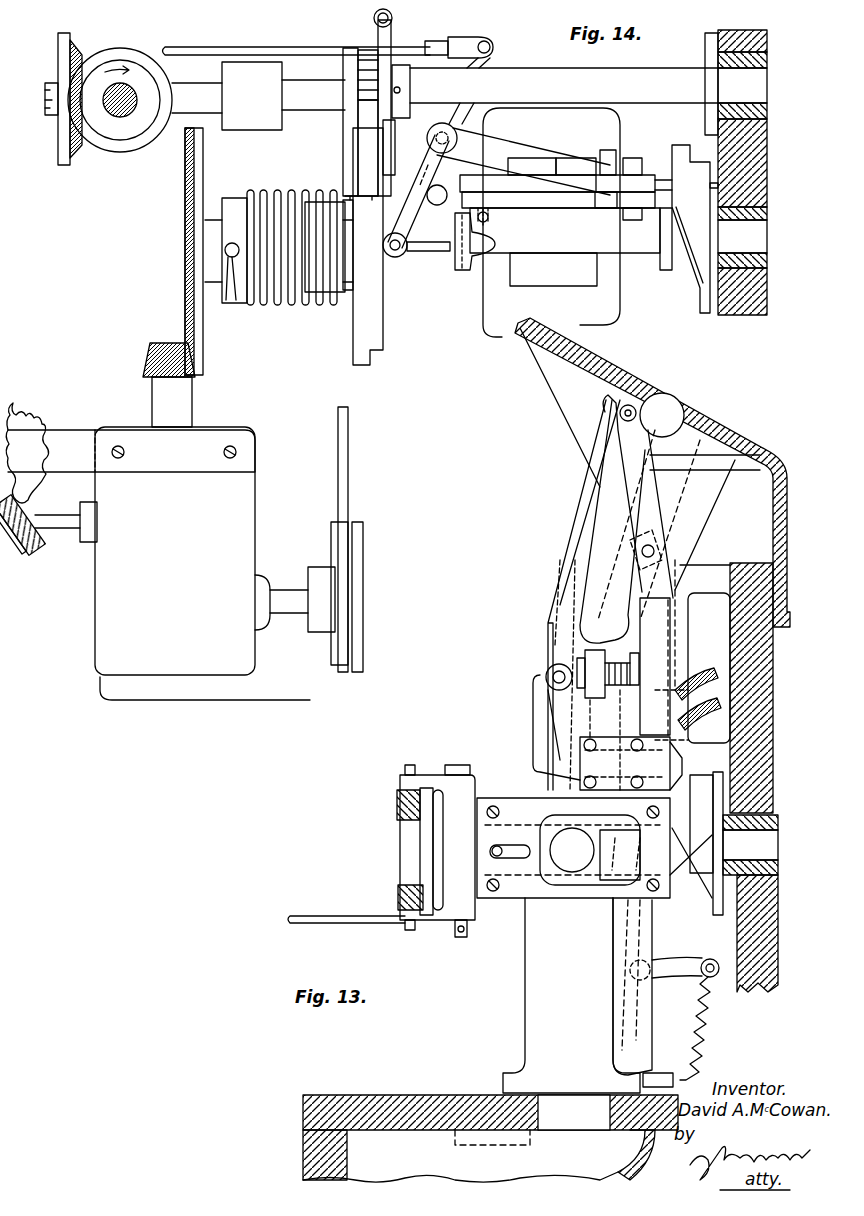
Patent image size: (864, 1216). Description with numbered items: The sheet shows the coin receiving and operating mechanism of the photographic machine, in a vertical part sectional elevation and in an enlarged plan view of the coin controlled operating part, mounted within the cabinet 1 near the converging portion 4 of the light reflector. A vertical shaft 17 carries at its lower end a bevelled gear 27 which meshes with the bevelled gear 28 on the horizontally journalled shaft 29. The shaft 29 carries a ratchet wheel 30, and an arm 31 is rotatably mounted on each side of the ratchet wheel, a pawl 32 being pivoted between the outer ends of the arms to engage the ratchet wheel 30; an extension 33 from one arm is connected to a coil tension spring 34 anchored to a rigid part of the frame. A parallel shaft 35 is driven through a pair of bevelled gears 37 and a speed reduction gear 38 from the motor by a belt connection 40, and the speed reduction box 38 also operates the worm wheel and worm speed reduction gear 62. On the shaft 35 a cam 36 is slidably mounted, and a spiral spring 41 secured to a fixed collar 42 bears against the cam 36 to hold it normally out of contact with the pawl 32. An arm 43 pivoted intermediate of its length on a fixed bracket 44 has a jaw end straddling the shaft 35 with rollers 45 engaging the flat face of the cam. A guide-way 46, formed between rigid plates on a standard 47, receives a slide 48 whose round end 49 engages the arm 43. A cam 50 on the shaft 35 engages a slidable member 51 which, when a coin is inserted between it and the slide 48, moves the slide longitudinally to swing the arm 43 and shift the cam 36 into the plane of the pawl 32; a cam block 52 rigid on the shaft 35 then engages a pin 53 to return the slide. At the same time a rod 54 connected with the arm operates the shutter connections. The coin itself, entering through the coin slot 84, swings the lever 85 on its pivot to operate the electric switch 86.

In FIG. 14, the cabinet 1 is at (749, 48).
In FIG. 13, the cabinet 1 is at (752, 985).
In FIG. 13, the converging portion 4 is at (628, 405).
In FIG. 14, the vertical shaft 17 is at (125, 112).
In FIG. 14, the bevelled gear 27 is at (136, 54).
In FIG. 14, the bevelled gear 28 is at (63, 158).
In FIG. 14, the shaft 29 is at (190, 88).
In FIG. 14, the ratchet wheel 30 is at (362, 58).
In FIG. 14, the arm 31 is at (346, 134).
In FIG. 14, the pawl 32 is at (362, 156).
In FIG. 14, the extension 33 is at (430, 43).
In FIG. 14, the coil tension spring 34 is at (393, 21).
In FIG. 14, the shaft 35 is at (638, 247).
In FIG. 14, the cam 36 is at (374, 242).
In FIG. 14, the bevelled gears 37 is at (170, 343).
In FIG. 14, the speed reduction gear 38 is at (170, 551).
In FIG. 14, the belt connection 40 is at (349, 485).
In FIG. 14, the spiral spring 41 is at (309, 306).
In FIG. 14, the fixed collar 42 is at (257, 196).
In FIG. 14, the arm 43 is at (425, 170).
In FIG. 13, the arm 43 is at (470, 792).
In FIG. 14, the fixed bracket 44 is at (528, 148).
In FIG. 14, the rollers 45 is at (403, 257).
In FIG. 13, the rollers 45 is at (405, 812).
In FIG. 14, the guide-way 46 is at (559, 178).
In FIG. 13, the guide-way 46 is at (572, 875).
In FIG. 14, the standard 47 is at (572, 232).
In FIG. 13, the standard 47 is at (530, 988).
In FIG. 14, the slide 48 is at (525, 178).
In FIG. 13, the slide 48 is at (546, 887).
In FIG. 14, the round end 49 is at (437, 204).
In FIG. 14, the cam 50 is at (695, 229).
In FIG. 13, the cam 50 is at (698, 868).
In FIG. 14, the slidable member 51 is at (636, 175).
In FIG. 13, the slidable member 51 is at (615, 872).
In FIG. 14, the cam block 52 is at (475, 241).
In FIG. 14, the pin 53 is at (490, 220).
In FIG. 13, the pin 53 is at (498, 848).
In FIG. 14, the rod 54 is at (275, 46).
In FIG. 13, the rod 54 is at (341, 917).
In FIG. 14, the worm wheel and worm speed reduction gear 62 is at (34, 550).
In FIG. 13, the coin slot 84 is at (684, 415).
In FIG. 13, the lever 85 is at (648, 503).
In FIG. 13, the electric switch 86 is at (692, 668).